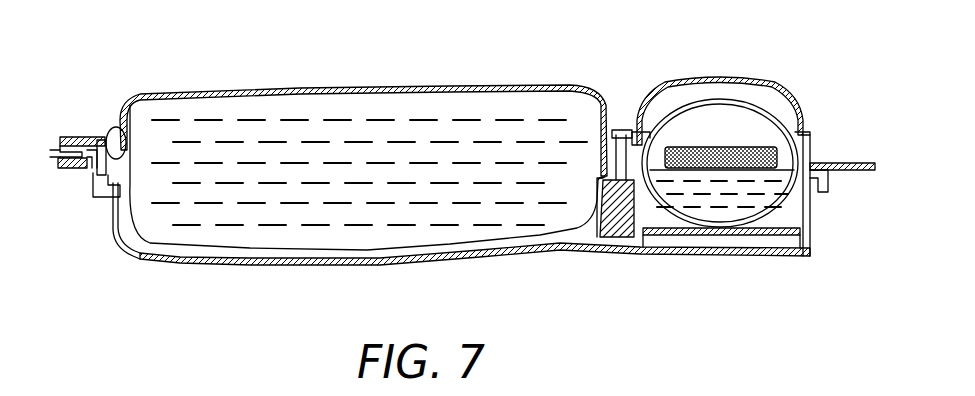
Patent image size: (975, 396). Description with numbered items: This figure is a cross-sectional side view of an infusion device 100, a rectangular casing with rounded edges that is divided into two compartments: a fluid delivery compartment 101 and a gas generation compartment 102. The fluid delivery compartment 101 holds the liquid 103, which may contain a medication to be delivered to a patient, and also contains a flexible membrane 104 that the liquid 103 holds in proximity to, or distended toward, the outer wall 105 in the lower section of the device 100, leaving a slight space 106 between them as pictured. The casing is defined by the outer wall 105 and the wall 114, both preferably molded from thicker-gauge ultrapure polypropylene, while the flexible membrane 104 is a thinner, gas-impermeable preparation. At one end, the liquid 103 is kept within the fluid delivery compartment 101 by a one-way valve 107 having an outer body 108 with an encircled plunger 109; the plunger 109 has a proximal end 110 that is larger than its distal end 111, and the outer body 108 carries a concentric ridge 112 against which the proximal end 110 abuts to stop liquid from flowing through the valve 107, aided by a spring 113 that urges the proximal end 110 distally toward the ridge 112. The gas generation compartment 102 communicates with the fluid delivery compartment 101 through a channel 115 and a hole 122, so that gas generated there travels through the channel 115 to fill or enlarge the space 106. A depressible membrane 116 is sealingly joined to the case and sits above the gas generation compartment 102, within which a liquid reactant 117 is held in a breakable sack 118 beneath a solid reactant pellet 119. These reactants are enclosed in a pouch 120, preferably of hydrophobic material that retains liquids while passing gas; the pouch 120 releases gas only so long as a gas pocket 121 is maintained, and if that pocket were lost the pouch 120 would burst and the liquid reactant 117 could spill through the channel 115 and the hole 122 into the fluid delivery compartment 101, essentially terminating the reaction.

The device 100 is at (461, 171).
The fluid delivery compartment 101 is at (345, 123).
The gas generation compartment 102 is at (735, 150).
The liquid 103 is at (272, 127).
The flexible membrane 104 is at (367, 250).
The outer wall 105 is at (238, 268).
The space 106 is at (505, 245).
The one-way valve 107 is at (77, 143).
The outer body 108 is at (63, 150).
The plunger 109 is at (83, 160).
The proximal end 110 is at (100, 183).
The distal end 111 is at (62, 152).
The concentric ridge 112 is at (93, 177).
The spring 113 is at (112, 128).
The wall 114 is at (448, 92).
The channel 115 is at (643, 238).
The depressible membrane 116 is at (692, 78).
The liquid reactant 117 is at (773, 205).
The breakable sack 118 is at (777, 177).
The solid reactant pellet 119 is at (745, 148).
The pouch 120 is at (675, 110).
The gas pocket 121 is at (670, 140).
The hole 122 is at (727, 230).